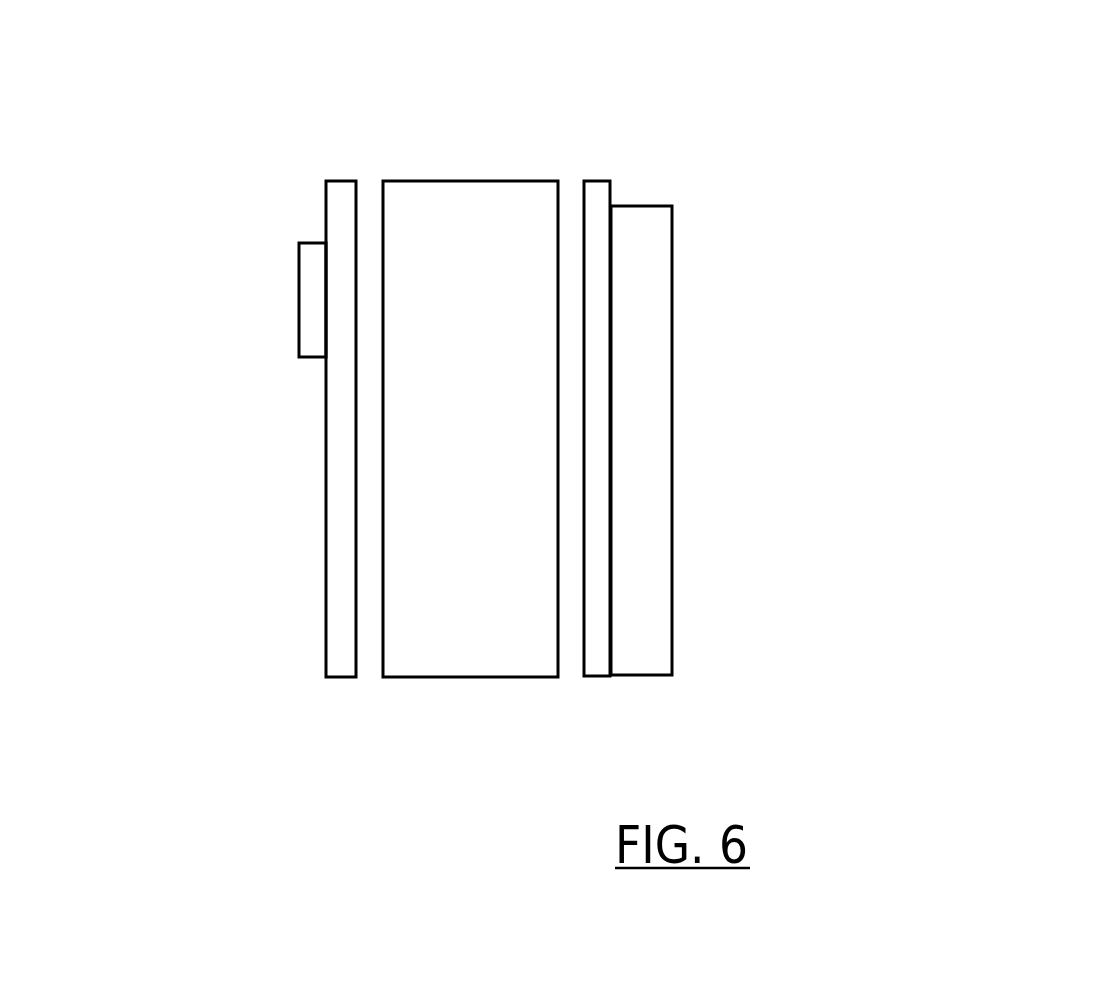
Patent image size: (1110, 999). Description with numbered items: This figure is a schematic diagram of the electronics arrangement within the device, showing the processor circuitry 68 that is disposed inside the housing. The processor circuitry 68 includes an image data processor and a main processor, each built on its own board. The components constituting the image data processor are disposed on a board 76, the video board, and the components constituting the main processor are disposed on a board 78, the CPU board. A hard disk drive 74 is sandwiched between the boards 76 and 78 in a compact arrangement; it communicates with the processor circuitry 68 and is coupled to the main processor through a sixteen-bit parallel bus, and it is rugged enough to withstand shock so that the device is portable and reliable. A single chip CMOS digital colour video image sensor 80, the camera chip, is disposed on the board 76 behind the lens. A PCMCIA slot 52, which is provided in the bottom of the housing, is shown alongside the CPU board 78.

The processor circuitry 68 is at (692, 123).
The board 76 is at (323, 181).
The digital colour video image sensor 80 is at (296, 305).
The hard disk drive 74 is at (495, 679).
The board 78 is at (613, 180).
The PCMCIA slot 52 is at (676, 439).